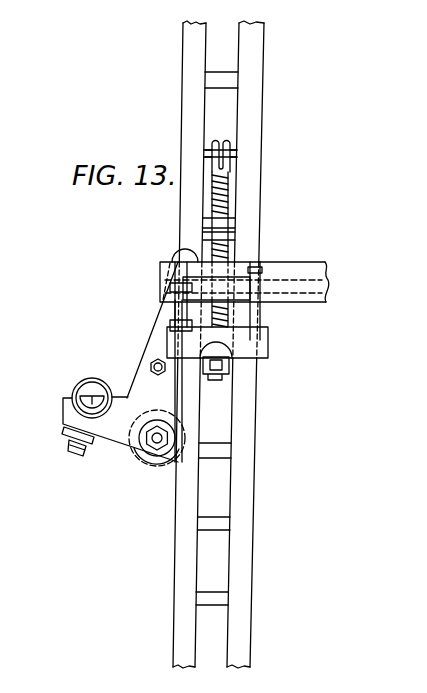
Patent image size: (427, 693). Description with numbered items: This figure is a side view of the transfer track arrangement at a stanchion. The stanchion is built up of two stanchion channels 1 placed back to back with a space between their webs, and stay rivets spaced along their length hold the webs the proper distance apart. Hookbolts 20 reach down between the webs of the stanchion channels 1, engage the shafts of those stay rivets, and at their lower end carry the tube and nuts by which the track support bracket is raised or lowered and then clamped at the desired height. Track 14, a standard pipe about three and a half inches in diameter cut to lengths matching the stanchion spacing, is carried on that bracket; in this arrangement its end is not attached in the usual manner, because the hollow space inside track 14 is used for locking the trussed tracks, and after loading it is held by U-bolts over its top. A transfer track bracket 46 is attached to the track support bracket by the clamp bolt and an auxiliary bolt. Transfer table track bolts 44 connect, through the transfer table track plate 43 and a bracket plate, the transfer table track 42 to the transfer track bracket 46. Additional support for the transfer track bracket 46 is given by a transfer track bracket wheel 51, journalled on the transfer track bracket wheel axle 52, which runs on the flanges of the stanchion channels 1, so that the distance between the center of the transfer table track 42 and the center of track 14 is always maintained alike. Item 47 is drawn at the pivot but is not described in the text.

The stanchion channels 1 is at (193, 128).
The hookbolts 20 is at (222, 198).
The track 14 is at (278, 268).
The pivot 47 is at (182, 258).
The transfer track bracket 46 is at (150, 363).
The transfer table track 42 is at (80, 380).
The transfer table track plate 43 is at (68, 414).
The transfer table track bolts 44 is at (77, 463).
The transfer track bracket wheel axle 52 is at (155, 463).
The transfer track bracket wheel 51 is at (150, 468).